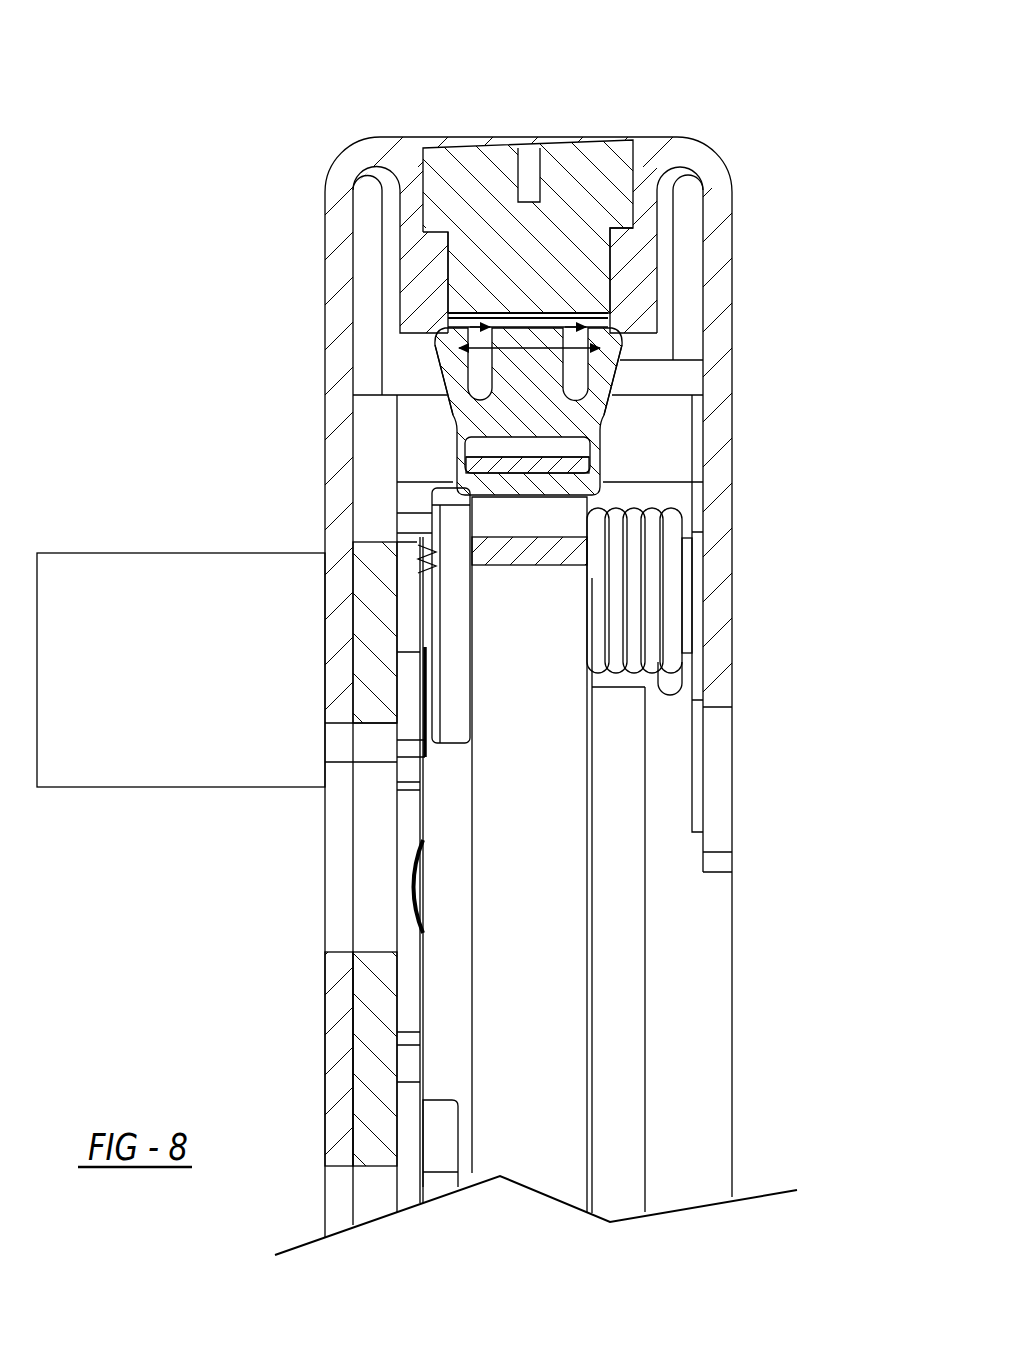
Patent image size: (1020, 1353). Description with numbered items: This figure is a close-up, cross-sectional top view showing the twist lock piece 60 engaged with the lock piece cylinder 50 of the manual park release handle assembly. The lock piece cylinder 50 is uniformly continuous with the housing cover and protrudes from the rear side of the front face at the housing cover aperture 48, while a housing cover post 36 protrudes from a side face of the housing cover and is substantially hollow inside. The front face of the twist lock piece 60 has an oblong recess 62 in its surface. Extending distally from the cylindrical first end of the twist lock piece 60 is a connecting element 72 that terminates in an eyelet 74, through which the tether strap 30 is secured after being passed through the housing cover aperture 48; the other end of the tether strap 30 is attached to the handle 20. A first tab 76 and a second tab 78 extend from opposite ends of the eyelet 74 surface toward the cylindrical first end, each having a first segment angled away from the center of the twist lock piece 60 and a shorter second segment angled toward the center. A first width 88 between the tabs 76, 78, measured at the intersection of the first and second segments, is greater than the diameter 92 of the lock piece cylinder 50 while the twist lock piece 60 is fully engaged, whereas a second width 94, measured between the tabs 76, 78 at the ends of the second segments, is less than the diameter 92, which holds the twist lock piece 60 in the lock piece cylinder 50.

The handle 20 is at (438, 934).
The tether strap 30 is at (526, 879).
The housing cover post 36 is at (99, 550).
The housing cover aperture 48 is at (478, 135).
The lock piece cylinder 50 is at (622, 270).
The twist lock piece 60 is at (592, 160).
The oblong recess in the front face 62 is at (530, 160).
The connecting element 72 is at (510, 382).
The eyelet 74 is at (564, 447).
The first tab 76 is at (438, 384).
The second tab 78 is at (627, 378).
The first width 88 is at (529, 354).
The diameter 92 is at (528, 306).
The second width 94 is at (528, 330).